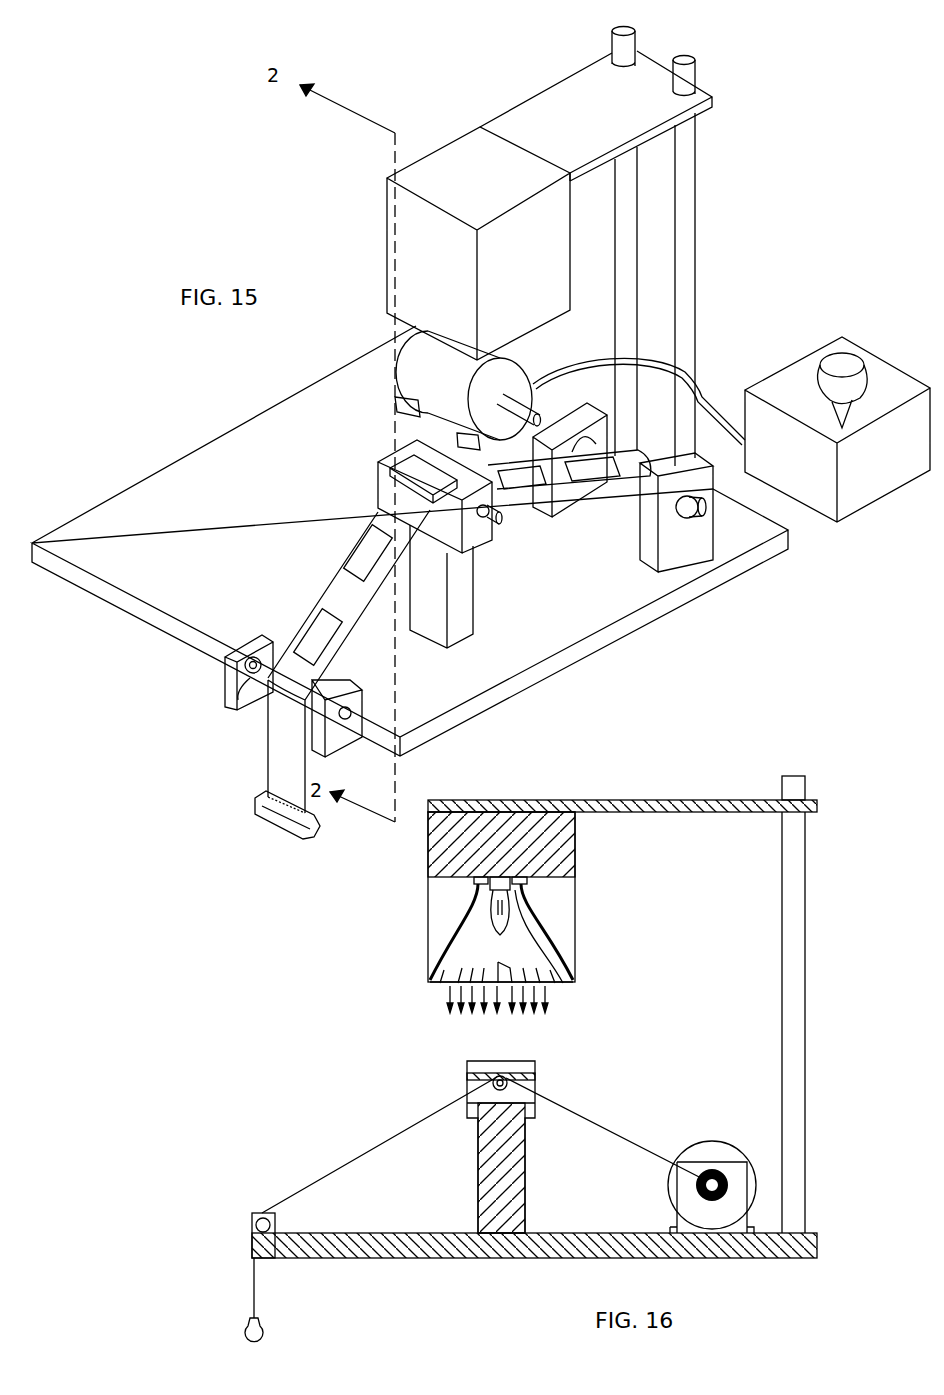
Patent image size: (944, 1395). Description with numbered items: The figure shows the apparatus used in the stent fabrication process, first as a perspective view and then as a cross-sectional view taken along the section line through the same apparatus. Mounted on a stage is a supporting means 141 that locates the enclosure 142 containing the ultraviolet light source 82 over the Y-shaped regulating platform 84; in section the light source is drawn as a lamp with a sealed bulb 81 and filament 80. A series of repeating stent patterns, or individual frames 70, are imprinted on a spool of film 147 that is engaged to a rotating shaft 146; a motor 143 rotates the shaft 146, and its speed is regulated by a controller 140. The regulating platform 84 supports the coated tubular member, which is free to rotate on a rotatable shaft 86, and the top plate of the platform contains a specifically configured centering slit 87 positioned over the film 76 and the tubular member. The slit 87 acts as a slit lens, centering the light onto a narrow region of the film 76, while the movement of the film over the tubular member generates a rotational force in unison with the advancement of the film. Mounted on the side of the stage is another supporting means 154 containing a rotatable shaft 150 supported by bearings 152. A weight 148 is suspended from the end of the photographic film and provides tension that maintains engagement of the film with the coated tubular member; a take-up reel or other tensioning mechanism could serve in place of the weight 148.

In FIG. 15, the individual frames 70 is at (363, 540).
In FIG. 15, the transparent film 76 is at (330, 592).
In FIG. 16, the transparent film 76 is at (447, 1106).
In FIG. 16, the filament 80 is at (560, 932).
In FIG. 16, the sealed bulb 81 is at (561, 985).
In FIG. 16, the light source 82 is at (440, 985).
In FIG. 15, the regulating platform 84 is at (477, 535).
In FIG. 16, the regulating platform 84 is at (513, 1072).
In FIG. 15, the rotatable shaft 86 is at (502, 512).
In FIG. 16, the rotatable shaft 86 is at (510, 1098).
In FIG. 15, the centering slit 87 is at (395, 447).
In FIG. 15, the controller 140 is at (770, 390).
In FIG. 15, the supporting means 141 is at (688, 187).
In FIG. 16, the supporting means 141 is at (808, 932).
In FIG. 15, the enclosure 142 is at (385, 237).
In FIG. 16, the enclosure 142 is at (427, 907).
In FIG. 15, the motor 143 is at (405, 372).
In FIG. 16, the motor 143 is at (720, 1118).
In FIG. 15, the rotating shaft 146 is at (573, 375).
In FIG. 15, the spool of film 147 is at (618, 487).
In FIG. 15, the weight 148 is at (255, 826).
In FIG. 16, the weight 148 is at (248, 1333).
In FIG. 15, the rotatable shaft 150 is at (250, 678).
In FIG. 15, the bearings 152 is at (225, 680).
In FIG. 15, the supporting means 154 is at (252, 647).